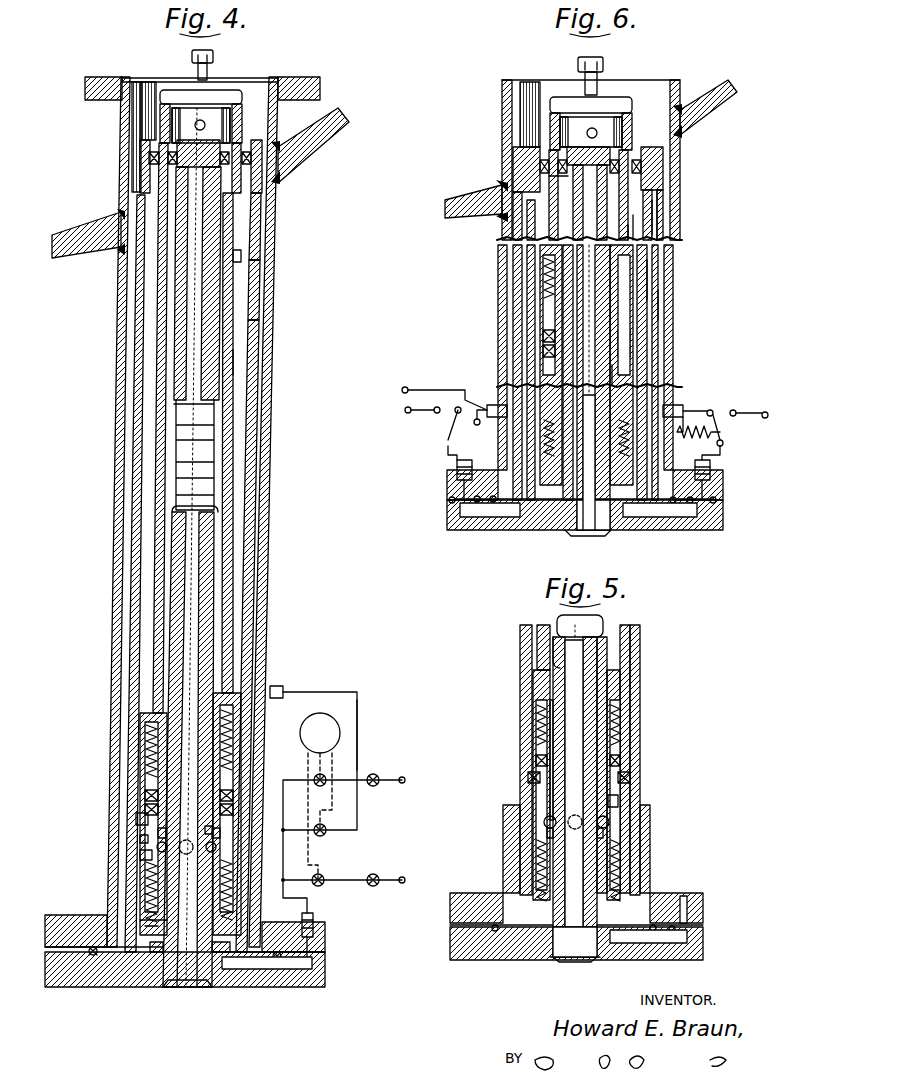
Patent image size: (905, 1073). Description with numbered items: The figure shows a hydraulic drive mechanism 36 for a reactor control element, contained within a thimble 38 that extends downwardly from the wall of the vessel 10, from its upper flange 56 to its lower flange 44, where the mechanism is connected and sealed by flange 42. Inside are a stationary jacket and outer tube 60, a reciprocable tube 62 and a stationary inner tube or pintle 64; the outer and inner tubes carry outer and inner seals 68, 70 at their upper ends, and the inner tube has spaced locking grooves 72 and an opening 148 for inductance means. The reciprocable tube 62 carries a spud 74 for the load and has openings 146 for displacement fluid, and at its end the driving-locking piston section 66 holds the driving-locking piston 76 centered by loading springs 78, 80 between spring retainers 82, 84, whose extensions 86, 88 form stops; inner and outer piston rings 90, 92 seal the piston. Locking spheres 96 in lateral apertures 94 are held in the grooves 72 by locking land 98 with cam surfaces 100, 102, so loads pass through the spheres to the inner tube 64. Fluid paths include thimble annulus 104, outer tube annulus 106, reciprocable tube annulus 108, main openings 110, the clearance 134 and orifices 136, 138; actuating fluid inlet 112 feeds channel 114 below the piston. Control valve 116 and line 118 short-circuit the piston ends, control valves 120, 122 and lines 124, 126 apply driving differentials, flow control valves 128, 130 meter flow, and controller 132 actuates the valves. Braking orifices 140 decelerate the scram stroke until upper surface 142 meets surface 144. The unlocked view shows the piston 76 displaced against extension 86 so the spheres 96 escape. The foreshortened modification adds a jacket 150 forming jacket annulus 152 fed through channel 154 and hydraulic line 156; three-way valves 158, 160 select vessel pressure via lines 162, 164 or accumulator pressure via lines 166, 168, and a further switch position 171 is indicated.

In FIG. 4, the vessel 10 is at (318, 135).
In FIG. 6, the vessel 10 is at (722, 100).
In FIG. 4, the drive mechanism 36 is at (128, 595).
In FIG. 4, the thimble 38 is at (116, 555).
In FIG. 6, the thimble 38 is at (682, 167).
In FIG. 5, the thimble 38 is at (638, 875).
In FIG. 4, the flange 42 is at (55, 975).
In FIG. 6, the flange 42 is at (450, 518).
In FIG. 5, the flange 42 is at (460, 960).
In FIG. 4, the lower flange 44 is at (55, 940).
In FIG. 6, the lower flange 44 is at (450, 485).
In FIG. 5, the lower flange 44 is at (702, 912).
In FIG. 4, the upper flange 56 is at (92, 100).
In FIG. 4, the stationary jacket and outer tube 60 is at (258, 334).
In FIG. 6, the stationary jacket and outer tube 60 is at (648, 285).
In FIG. 5, the stationary jacket and outer tube 60 is at (640, 640).
In FIG. 4, the reciprocable tube 62 is at (233, 387).
In FIG. 6, the reciprocable tube 62 is at (600, 265).
In FIG. 5, the reciprocable tube 62 is at (615, 668).
In FIG. 4, the stationary inner tube or pintle 64 is at (208, 572).
In FIG. 6, the stationary inner tube or pintle 64 is at (600, 350).
In FIG. 5, the stationary inner tube or pintle 64 is at (600, 620).
In FIG. 4, the driving-locking piston section 66 is at (222, 745).
In FIG. 6, the driving-locking piston section 66 is at (612, 372).
In FIG. 5, the driving-locking piston section 66 is at (605, 750).
In FIG. 4, the outer seal 68 is at (149, 158).
In FIG. 6, the outer seal 68 is at (540, 166).
In FIG. 4, the inner seal 70 is at (176, 171).
In FIG. 6, the inner seal 70 is at (560, 178).
In FIG. 4, the locking grooves 72 is at (210, 437).
In FIG. 5, the locking grooves 72 is at (556, 778).
In FIG. 4, the spud 74 is at (214, 58).
In FIG. 6, the spud 74 is at (604, 64).
In FIG. 4, the driving-locking piston 76 is at (158, 832).
In FIG. 6, the driving-locking piston 76 is at (550, 345).
In FIG. 5, the driving-locking piston 76 is at (605, 832).
In FIG. 4, the loading spring 78 is at (150, 745).
In FIG. 6, the loading spring 78 is at (545, 323).
In FIG. 5, the loading spring 78 is at (540, 720).
In FIG. 4, the loading spring 80 is at (146, 887).
In FIG. 6, the loading spring 80 is at (550, 500).
In FIG. 5, the loading spring 80 is at (540, 847).
In FIG. 4, the spring retainer 82 is at (148, 718).
In FIG. 4, the spring retainer 84 is at (140, 925).
In FIG. 4, the extension 86 is at (146, 750).
In FIG. 5, the extension 86 is at (535, 735).
In FIG. 4, the extension 88 is at (150, 900).
In FIG. 5, the extension 88 is at (538, 885).
In FIG. 4, the inner piston ring 90 is at (148, 796).
In FIG. 5, the inner piston ring 90 is at (620, 765).
In FIG. 4, the outer piston ring 92 is at (150, 800).
In FIG. 5, the outer piston ring 92 is at (630, 785).
In FIG. 4, the lateral apertures 94 is at (186, 855).
In FIG. 4, the locking spheres 96 is at (158, 845).
In FIG. 5, the locking spheres 96 is at (544, 823).
In FIG. 4, the locking land 98 is at (140, 838).
In FIG. 4, the cam surface 100 is at (140, 812).
In FIG. 4, the cam surface 102 is at (140, 853).
In FIG. 4, the thimble annulus 104 is at (257, 233).
In FIG. 6, the thimble annulus 104 is at (664, 188).
In FIG. 5, the thimble annulus 104 is at (648, 890).
In FIG. 4, the outer tube annulus 106 is at (240, 361).
In FIG. 6, the outer tube annulus 106 is at (636, 228).
In FIG. 5, the outer tube annulus 106 is at (623, 656).
In FIG. 4, the reciprocable tube annulus 108 is at (218, 467).
In FIG. 5, the reciprocable tube annulus 108 is at (553, 636).
In FIG. 4, the main openings 110 is at (254, 297).
In FIG. 6, the main openings 110 is at (650, 207).
In FIG. 6, the actuating fluid inlet 112 is at (712, 470).
In FIG. 4, the channel 114 is at (312, 975).
In FIG. 6, the channel 114 is at (712, 492).
In FIG. 5, the channel 114 is at (650, 958).
In FIG. 4, the control valve 116 is at (326, 833).
In FIG. 4, the line 118 is at (358, 740).
In FIG. 4, the control valve 120 is at (326, 776).
In FIG. 4, the control valve 122 is at (320, 887).
In FIG. 4, the line 124 is at (377, 775).
In FIG. 4, the line 126 is at (360, 880).
In FIG. 4, the flow control valve 128 is at (376, 787).
In FIG. 4, the flow control valve 130 is at (375, 888).
In FIG. 4, the control valve controller 132 is at (340, 733).
In FIG. 4, the clearance 134 is at (160, 965).
In FIG. 4, the orifice 136 is at (208, 833).
In FIG. 5, the orifice 136 is at (600, 822).
In FIG. 4, the orifice 138 is at (216, 845).
In FIG. 5, the orifice 138 is at (618, 805).
In FIG. 4, the braking orifices 140 is at (241, 257).
In FIG. 4, the upper surface 142 is at (222, 668).
In FIG. 4, the surface 144 is at (236, 185).
In FIG. 4, the openings 146 is at (160, 124).
In FIG. 6, the openings 146 is at (630, 135).
In FIG. 4, the opening 148 is at (194, 540).
In FIG. 6, the opening 148 is at (595, 533).
In FIG. 5, the opening 148 is at (573, 655).
In FIG. 6, the jacket 150 is at (624, 232).
In FIG. 6, the jacket annulus 152 is at (652, 302).
In FIG. 6, the channel 154 is at (492, 530).
In FIG. 6, the hydraulic line 156 is at (457, 462).
In FIG. 6, the three-way valve 158 is at (448, 440).
In FIG. 6, the three-way valve 160 is at (728, 447).
In FIG. 6, the line 162 is at (705, 410).
In FIG. 6, the line 164 is at (480, 405).
In FIG. 6, the line 166 is at (752, 416).
In FIG. 6, the line 168 is at (408, 414).
In FIG. 6, the switch blade 171 is at (475, 426).